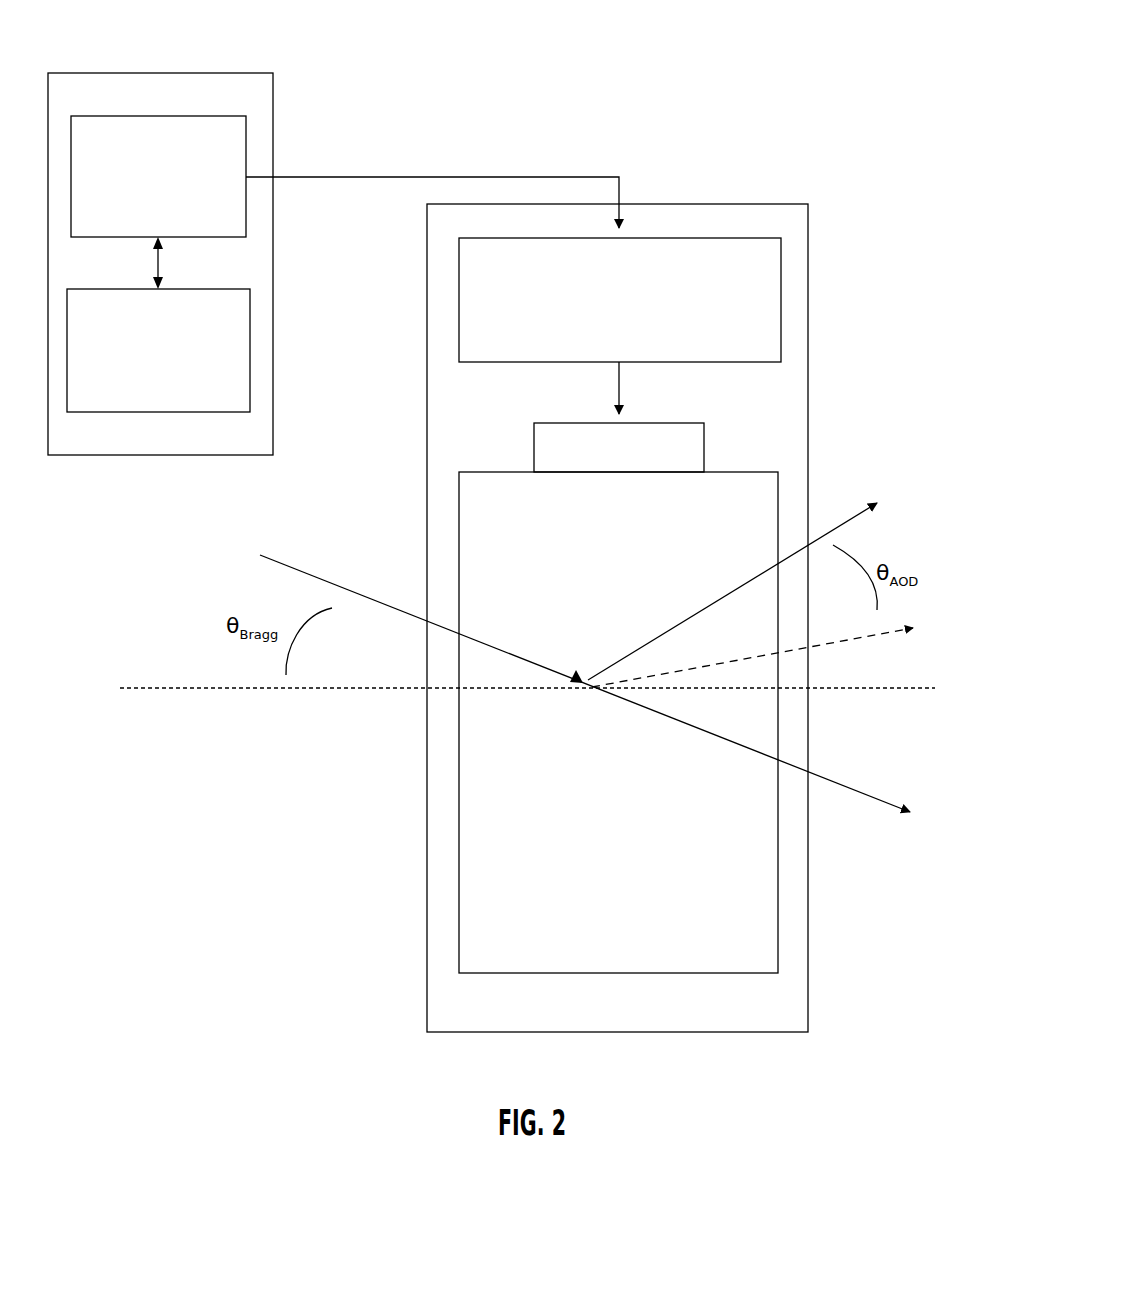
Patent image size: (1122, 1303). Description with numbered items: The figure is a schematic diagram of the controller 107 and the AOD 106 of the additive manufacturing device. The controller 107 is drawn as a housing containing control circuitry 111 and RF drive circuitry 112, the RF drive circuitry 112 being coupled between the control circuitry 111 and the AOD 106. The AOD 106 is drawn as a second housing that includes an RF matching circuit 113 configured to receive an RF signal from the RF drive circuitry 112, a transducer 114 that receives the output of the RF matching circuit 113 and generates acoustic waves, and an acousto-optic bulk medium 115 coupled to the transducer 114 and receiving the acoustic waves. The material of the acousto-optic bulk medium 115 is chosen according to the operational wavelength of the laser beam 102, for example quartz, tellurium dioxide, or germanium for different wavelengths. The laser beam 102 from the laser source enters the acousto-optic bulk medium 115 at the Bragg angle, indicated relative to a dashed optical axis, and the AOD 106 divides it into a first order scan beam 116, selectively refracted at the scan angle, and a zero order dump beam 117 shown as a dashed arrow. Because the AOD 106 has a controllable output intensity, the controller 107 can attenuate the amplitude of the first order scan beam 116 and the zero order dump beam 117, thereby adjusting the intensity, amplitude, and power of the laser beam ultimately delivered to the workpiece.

The laser beam 102 is at (298, 568).
The AOD 106 is at (747, 197).
The controller 107 is at (273, 148).
The control circuitry 111 is at (97, 380).
The RF drive circuitry 112 is at (192, 140).
The RF matching circuit 113 is at (772, 288).
The transducer 114 is at (676, 452).
The acousto-optic bulk medium 115 is at (768, 515).
The first order scan beam 116 is at (842, 523).
The zero order dump beam 117 is at (850, 790).